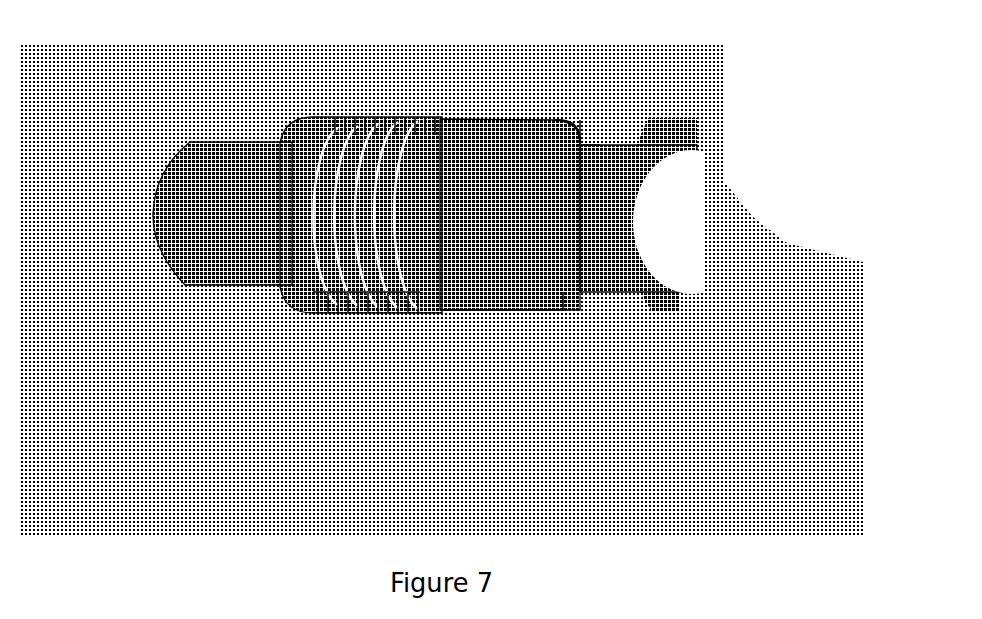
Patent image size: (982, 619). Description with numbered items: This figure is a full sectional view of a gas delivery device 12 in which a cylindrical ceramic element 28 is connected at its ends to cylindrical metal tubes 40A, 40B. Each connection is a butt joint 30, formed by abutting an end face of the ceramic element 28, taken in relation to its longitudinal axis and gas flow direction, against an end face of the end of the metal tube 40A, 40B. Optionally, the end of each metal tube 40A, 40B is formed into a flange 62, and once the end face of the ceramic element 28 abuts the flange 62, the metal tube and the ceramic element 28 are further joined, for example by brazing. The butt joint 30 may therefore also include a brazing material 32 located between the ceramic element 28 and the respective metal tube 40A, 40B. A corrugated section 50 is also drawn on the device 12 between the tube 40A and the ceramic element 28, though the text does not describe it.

The gas delivery device 12 is at (148, 343).
The metal tube 40A is at (177, 142).
The corrugated connector section 50 is at (360, 327).
The ceramic element 28 is at (482, 113).
The butt joint 30 is at (576, 113).
The flange 62 is at (583, 131).
The metal tube 40B is at (638, 127).
The brazing material 32 is at (562, 308).